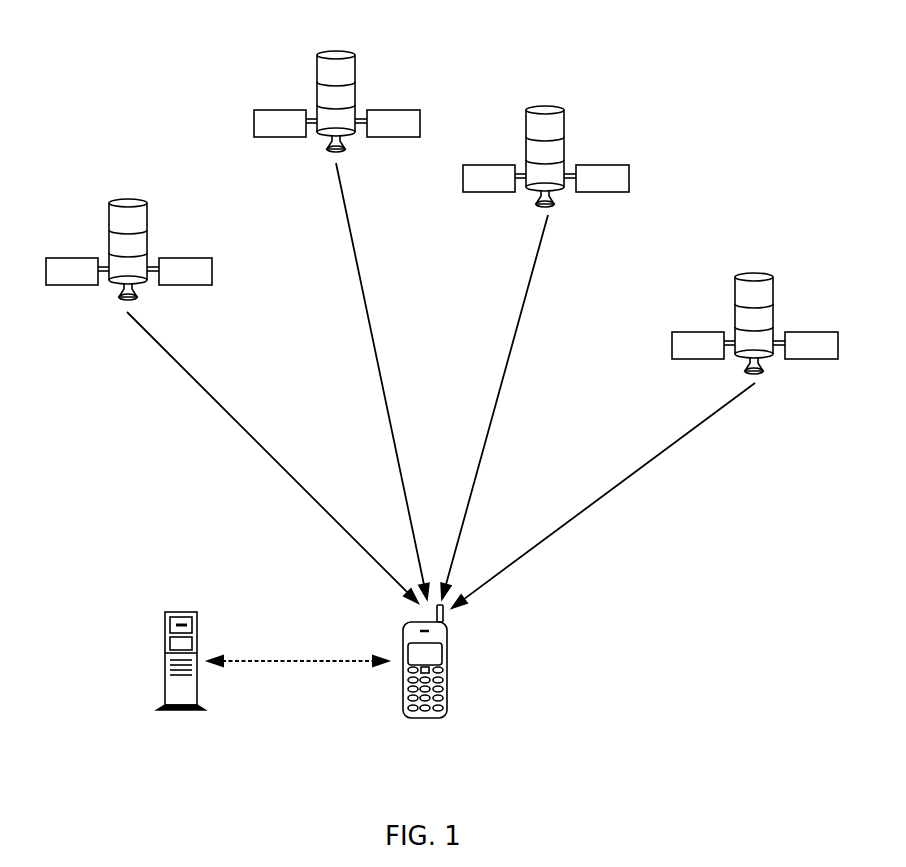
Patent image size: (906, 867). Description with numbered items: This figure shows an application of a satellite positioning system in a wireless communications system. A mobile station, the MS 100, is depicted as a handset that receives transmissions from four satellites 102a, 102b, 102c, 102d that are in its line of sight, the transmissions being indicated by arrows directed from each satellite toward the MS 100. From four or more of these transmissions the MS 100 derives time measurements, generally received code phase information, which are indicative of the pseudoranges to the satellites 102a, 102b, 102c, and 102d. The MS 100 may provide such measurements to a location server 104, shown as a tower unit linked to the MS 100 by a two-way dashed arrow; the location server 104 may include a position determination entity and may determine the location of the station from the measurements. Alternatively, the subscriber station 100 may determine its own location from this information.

The MS 100 is at (428, 718).
The satellite 102a is at (130, 203).
The satellite 102b is at (338, 55).
The satellite 102c is at (547, 110).
The satellite 102d is at (756, 277).
The location server 104 is at (176, 612).